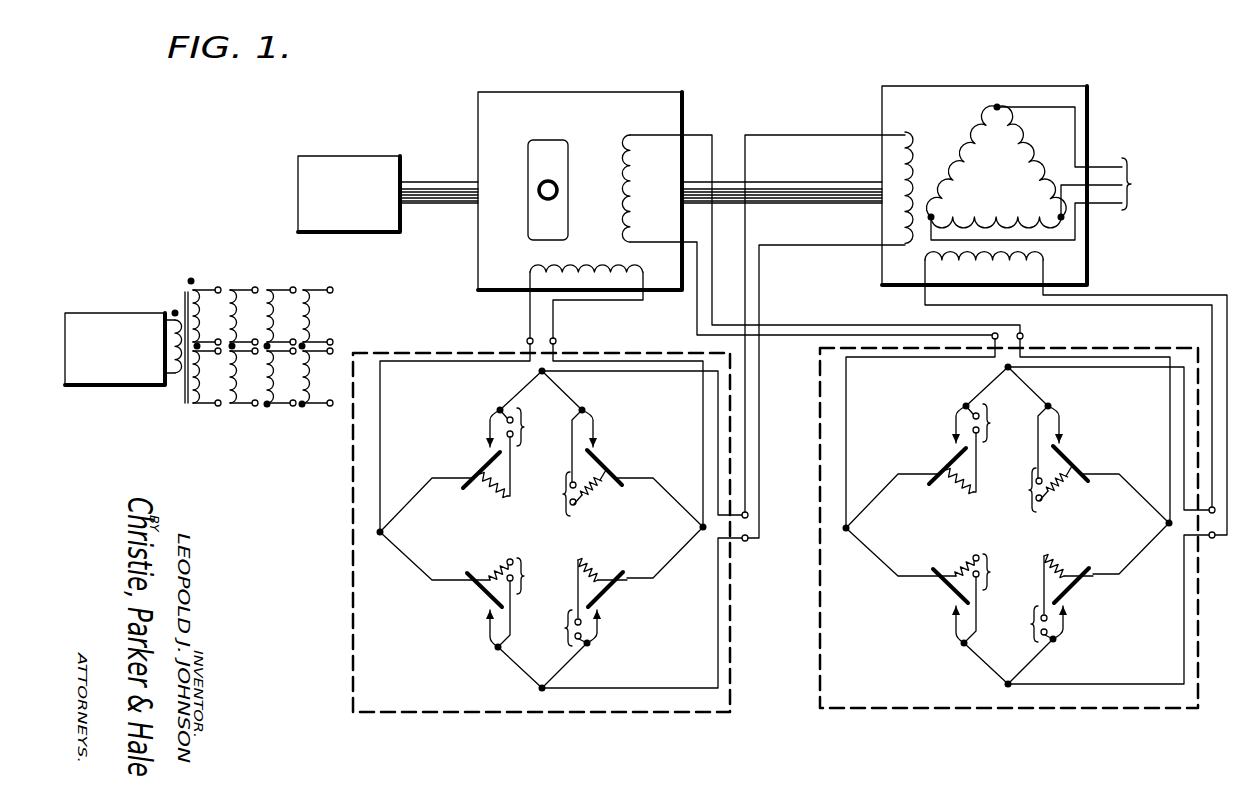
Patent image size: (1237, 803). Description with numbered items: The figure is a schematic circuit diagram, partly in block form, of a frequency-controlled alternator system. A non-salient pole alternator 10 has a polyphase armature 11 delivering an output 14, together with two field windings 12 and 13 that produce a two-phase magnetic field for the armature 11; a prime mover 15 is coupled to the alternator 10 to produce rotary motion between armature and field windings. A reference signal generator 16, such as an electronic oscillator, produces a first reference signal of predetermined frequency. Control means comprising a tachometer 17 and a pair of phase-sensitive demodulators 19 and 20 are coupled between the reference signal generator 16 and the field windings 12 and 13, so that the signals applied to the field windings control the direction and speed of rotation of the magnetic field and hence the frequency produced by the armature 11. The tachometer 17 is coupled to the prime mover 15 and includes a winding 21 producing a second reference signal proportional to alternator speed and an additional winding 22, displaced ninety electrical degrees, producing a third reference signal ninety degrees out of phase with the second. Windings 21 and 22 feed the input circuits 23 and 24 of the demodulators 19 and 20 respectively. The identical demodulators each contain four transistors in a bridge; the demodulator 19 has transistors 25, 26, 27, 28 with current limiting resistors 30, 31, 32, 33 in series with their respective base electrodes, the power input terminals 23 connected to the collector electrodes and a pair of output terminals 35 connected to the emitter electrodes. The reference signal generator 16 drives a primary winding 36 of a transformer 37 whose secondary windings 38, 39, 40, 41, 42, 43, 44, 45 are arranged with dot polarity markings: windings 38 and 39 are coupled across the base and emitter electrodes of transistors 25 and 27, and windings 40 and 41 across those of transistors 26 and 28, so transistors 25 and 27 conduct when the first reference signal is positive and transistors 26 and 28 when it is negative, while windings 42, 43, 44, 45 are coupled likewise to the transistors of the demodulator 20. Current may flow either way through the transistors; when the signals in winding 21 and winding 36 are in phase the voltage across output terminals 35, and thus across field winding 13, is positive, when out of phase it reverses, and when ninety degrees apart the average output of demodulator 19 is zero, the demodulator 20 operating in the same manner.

The non-salient pole alternator 10 is at (932, 86).
The polyphase armature 11 is at (1038, 137).
The field winding 12 is at (978, 264).
The field winding 13 is at (909, 131).
The output 14 is at (1156, 184).
The prime mover 15 is at (352, 156).
The reference signal generator 16 is at (110, 313).
The tachometer 17 is at (526, 92).
The phase-sensitive demodulator 19 is at (818, 582).
The phase-sensitive demodulator 20 is at (350, 587).
The tachometer winding 21 is at (627, 133).
The additional tachometer winding 22 is at (599, 267).
The input circuit 23 is at (998, 334).
The input circuit 24 is at (532, 339).
The transistor 25 is at (934, 445).
The transistor 26 is at (1077, 443).
The transistor 27 is at (1080, 603).
The transistor 28 is at (936, 606).
The current limiting resistor 30 is at (947, 488).
The resistor 31 is at (1060, 491).
The resistor 32 is at (1061, 559).
The current limiting resistor 33 is at (953, 558).
The output terminals 35 is at (1213, 538).
The primary winding 36 is at (172, 378).
The transformer 37 is at (183, 290).
The secondary winding 38 is at (202, 290).
The secondary winding 39 is at (241, 290).
The secondary winding 40 is at (281, 290).
The secondary winding 41 is at (318, 290).
The secondary winding 42 is at (200, 404).
The secondary winding 43 is at (238, 404).
The secondary winding 44 is at (276, 404).
The secondary winding 45 is at (313, 404).